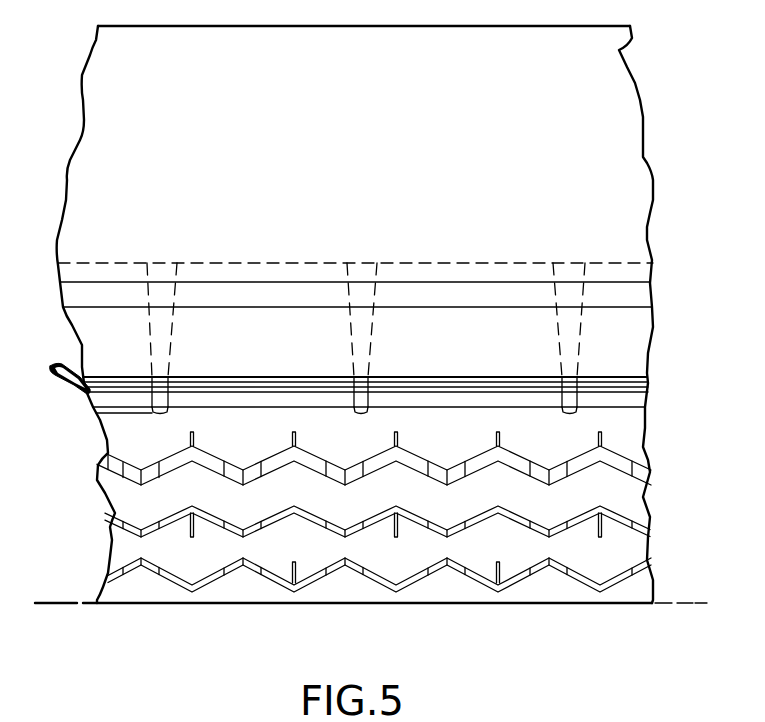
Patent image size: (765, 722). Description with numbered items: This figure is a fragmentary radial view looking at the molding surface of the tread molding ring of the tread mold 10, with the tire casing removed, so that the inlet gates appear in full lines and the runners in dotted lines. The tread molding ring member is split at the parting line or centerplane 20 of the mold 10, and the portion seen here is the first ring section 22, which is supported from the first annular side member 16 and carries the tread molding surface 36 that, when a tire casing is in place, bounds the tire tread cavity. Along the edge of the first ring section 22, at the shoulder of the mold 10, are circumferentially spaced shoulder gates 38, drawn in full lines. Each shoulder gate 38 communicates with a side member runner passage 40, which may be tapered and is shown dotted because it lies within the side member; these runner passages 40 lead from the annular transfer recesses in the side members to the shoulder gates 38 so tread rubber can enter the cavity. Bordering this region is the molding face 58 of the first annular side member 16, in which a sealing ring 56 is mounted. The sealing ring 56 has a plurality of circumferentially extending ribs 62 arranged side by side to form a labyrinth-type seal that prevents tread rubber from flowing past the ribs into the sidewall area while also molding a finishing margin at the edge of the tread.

The tread mold 10 is at (651, 69).
The first annular side member 16 is at (648, 162).
The parting line or centerplane 20 is at (43, 605).
The first ring section 22 is at (652, 458).
The tread molding surface 36 is at (637, 502).
The shoulder gates 38 is at (152, 413).
The side member runner passages 40 is at (166, 326).
The sealing rings 56 is at (632, 210).
The molding faces 58 is at (632, 355).
The circumferentially extending ribs 62 is at (53, 374).